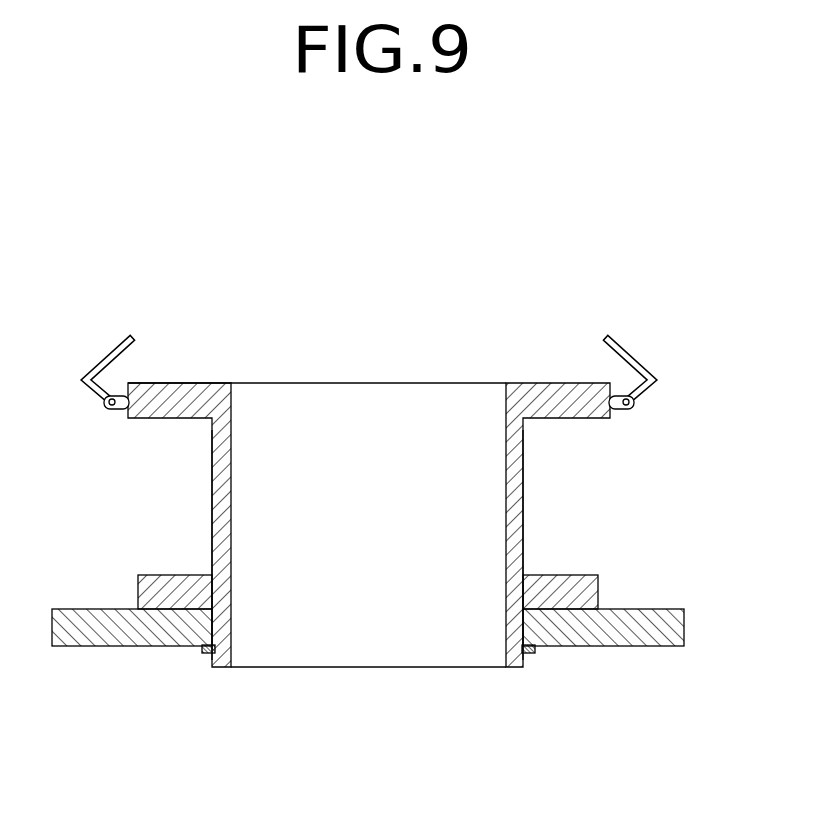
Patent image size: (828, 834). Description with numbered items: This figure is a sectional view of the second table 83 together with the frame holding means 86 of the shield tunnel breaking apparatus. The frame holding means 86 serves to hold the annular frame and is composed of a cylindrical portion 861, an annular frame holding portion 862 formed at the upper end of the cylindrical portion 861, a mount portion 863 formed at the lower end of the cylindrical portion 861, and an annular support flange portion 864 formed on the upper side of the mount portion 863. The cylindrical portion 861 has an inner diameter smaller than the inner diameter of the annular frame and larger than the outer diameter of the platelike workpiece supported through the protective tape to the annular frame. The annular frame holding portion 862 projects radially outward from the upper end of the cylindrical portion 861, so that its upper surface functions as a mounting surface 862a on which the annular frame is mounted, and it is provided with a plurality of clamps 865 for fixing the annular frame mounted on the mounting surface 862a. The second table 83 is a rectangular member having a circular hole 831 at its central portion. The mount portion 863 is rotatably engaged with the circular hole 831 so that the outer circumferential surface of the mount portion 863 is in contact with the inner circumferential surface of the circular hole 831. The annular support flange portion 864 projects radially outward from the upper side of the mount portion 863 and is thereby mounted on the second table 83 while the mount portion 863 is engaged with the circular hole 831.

The frame holding means 86 is at (343, 354).
The cylindrical portion 861 is at (522, 498).
The annular frame holding portion 862 is at (173, 380).
The mounting surface 862a is at (192, 382).
The mount portion 863 is at (232, 623).
The annular support flange portion 864 is at (598, 592).
The clamps 865 is at (112, 354).
The second table 83 is at (107, 640).
The circular hole 831 is at (517, 635).